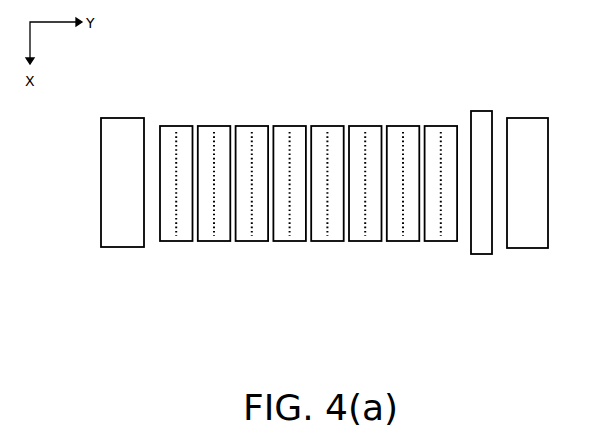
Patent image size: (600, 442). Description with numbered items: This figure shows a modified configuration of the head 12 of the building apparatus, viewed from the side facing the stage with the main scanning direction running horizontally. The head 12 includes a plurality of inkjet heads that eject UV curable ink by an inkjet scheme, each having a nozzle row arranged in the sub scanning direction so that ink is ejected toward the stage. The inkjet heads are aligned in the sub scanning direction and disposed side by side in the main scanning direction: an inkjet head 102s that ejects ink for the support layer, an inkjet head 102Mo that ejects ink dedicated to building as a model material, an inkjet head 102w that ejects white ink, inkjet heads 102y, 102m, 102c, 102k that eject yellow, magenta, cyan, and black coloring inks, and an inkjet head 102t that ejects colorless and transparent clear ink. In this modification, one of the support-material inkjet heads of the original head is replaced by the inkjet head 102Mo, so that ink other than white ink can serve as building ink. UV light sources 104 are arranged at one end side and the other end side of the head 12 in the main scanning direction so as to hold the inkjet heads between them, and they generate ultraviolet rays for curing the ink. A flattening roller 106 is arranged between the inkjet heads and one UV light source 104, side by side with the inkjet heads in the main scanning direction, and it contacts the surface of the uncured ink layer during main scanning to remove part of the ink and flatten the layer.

The head 12 is at (556, 53).
The inkjet head 102s is at (168, 242).
The inkjet head 102Mo is at (205, 242).
The inkjet head 102w is at (243, 242).
The inkjet head 102y is at (282, 242).
The inkjet head 102m is at (327, 242).
The inkjet head 102c is at (365, 242).
The inkjet head 102k is at (405, 242).
The inkjet head 102t is at (444, 242).
The UV light source 104 is at (108, 248).
The flattening roller 106 is at (481, 110).